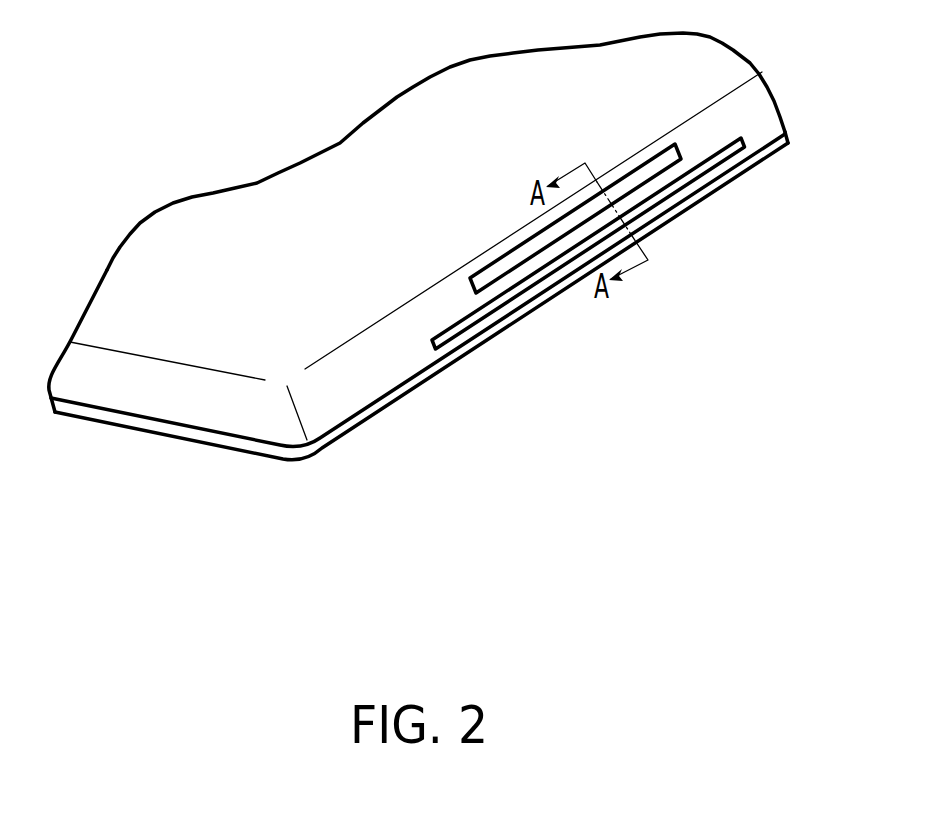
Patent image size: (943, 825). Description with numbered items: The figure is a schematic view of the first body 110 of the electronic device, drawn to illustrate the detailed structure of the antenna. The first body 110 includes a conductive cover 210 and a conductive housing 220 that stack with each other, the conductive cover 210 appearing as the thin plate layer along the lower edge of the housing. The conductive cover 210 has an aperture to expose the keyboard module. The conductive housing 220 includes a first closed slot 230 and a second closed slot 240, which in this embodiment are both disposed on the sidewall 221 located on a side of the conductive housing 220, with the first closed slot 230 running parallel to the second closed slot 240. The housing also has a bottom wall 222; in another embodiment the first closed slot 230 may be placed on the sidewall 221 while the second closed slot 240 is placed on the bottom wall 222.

The first body 110 is at (798, 573).
The conductive cover 210 is at (683, 210).
The conductive housing 220 is at (416, 324).
The sidewall 221 is at (380, 377).
The bottom wall 222 is at (262, 323).
The first closed slot 230 is at (458, 333).
The second closed slot 240 is at (514, 262).